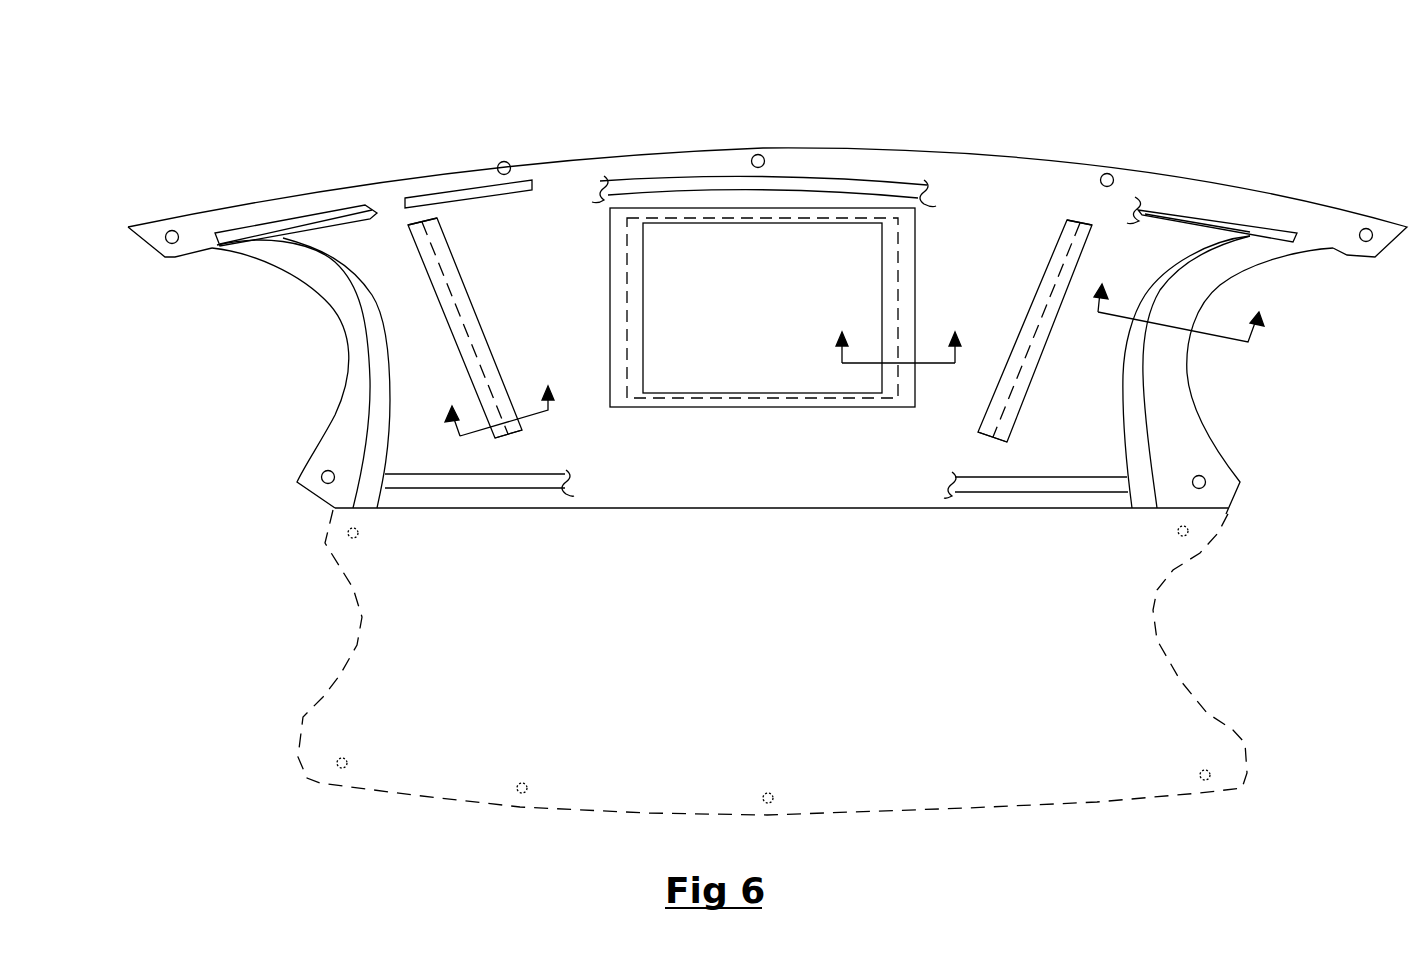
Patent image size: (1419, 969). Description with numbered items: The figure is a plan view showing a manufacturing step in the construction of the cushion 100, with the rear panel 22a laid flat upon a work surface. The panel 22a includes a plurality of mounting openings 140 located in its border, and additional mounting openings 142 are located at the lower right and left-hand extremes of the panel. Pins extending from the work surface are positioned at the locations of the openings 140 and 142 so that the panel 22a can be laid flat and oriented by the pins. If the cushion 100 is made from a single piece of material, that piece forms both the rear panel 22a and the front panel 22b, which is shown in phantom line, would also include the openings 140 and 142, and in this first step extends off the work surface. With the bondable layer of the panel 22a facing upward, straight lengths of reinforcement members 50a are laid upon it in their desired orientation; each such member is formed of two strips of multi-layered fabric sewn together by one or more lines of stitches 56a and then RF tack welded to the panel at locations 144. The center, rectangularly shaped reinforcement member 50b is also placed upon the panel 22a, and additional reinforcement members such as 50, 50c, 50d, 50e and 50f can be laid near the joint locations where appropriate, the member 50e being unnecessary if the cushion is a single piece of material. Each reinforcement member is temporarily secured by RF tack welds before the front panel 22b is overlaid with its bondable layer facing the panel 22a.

The cushion 100 is at (717, 44).
The rear panel 22a is at (331, 200).
The front panel 22b is at (592, 795).
The reinforcement member 50 is at (1047, 258).
The reinforcement member 50a is at (465, 283).
The center reinforcement member 50b is at (643, 296).
The reinforcement member 50c is at (335, 220).
The reinforcement member 50d is at (421, 354).
The reinforcement member 50e is at (478, 486).
The reinforcement member 50f is at (513, 160).
The stitches 56a is at (465, 338).
The mounting openings 140 is at (165, 232).
The mounting openings 142 is at (318, 492).
The RF tack weld locations 144 is at (440, 240).